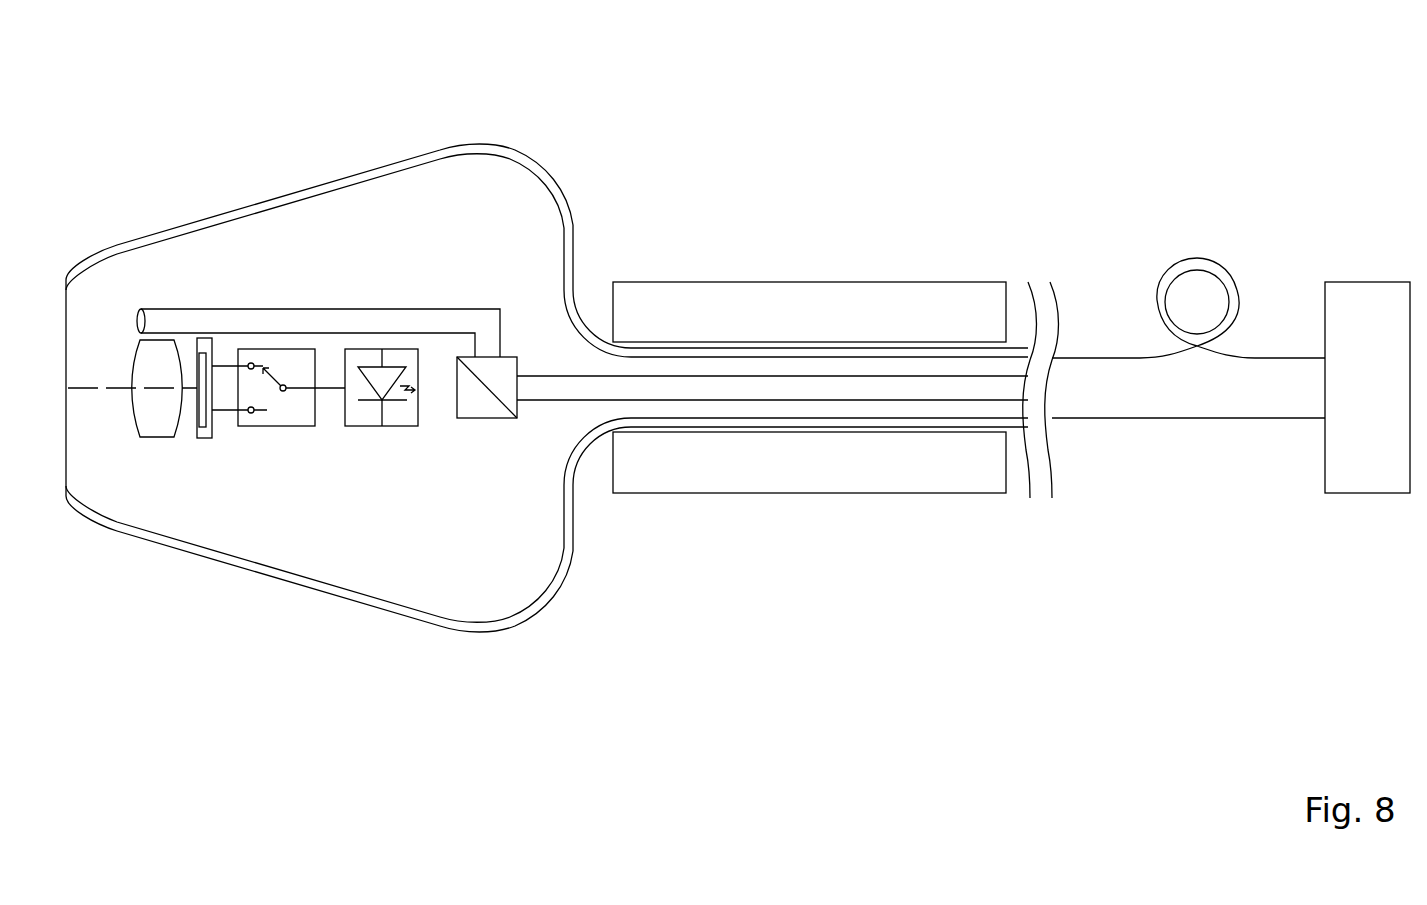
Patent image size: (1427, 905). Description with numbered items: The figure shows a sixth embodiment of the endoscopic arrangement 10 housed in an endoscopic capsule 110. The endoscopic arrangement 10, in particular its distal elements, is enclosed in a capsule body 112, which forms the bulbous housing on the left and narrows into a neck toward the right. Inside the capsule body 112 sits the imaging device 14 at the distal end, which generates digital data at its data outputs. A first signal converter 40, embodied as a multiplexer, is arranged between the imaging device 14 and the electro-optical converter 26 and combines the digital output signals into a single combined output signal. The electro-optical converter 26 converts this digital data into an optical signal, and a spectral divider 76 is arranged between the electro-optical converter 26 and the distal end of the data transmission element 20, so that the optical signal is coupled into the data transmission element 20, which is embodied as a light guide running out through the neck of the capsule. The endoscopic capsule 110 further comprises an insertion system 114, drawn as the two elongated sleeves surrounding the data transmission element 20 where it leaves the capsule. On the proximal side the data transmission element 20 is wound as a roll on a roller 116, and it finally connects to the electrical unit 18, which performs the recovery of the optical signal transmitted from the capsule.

The endoscopic capsule 110 is at (221, 98).
The capsule body 112 is at (363, 185).
The endoscopic arrangement 10 is at (511, 216).
The imaging device 14 is at (201, 440).
The first signal converter 40 is at (288, 428).
The electro-optical converter 26 is at (367, 428).
The spectral divider 76 is at (471, 420).
The insertion system 114 is at (805, 310).
The data transmission element 20 is at (1160, 274).
The roller 116 is at (1207, 283).
The electrical unit 18 is at (1377, 400).